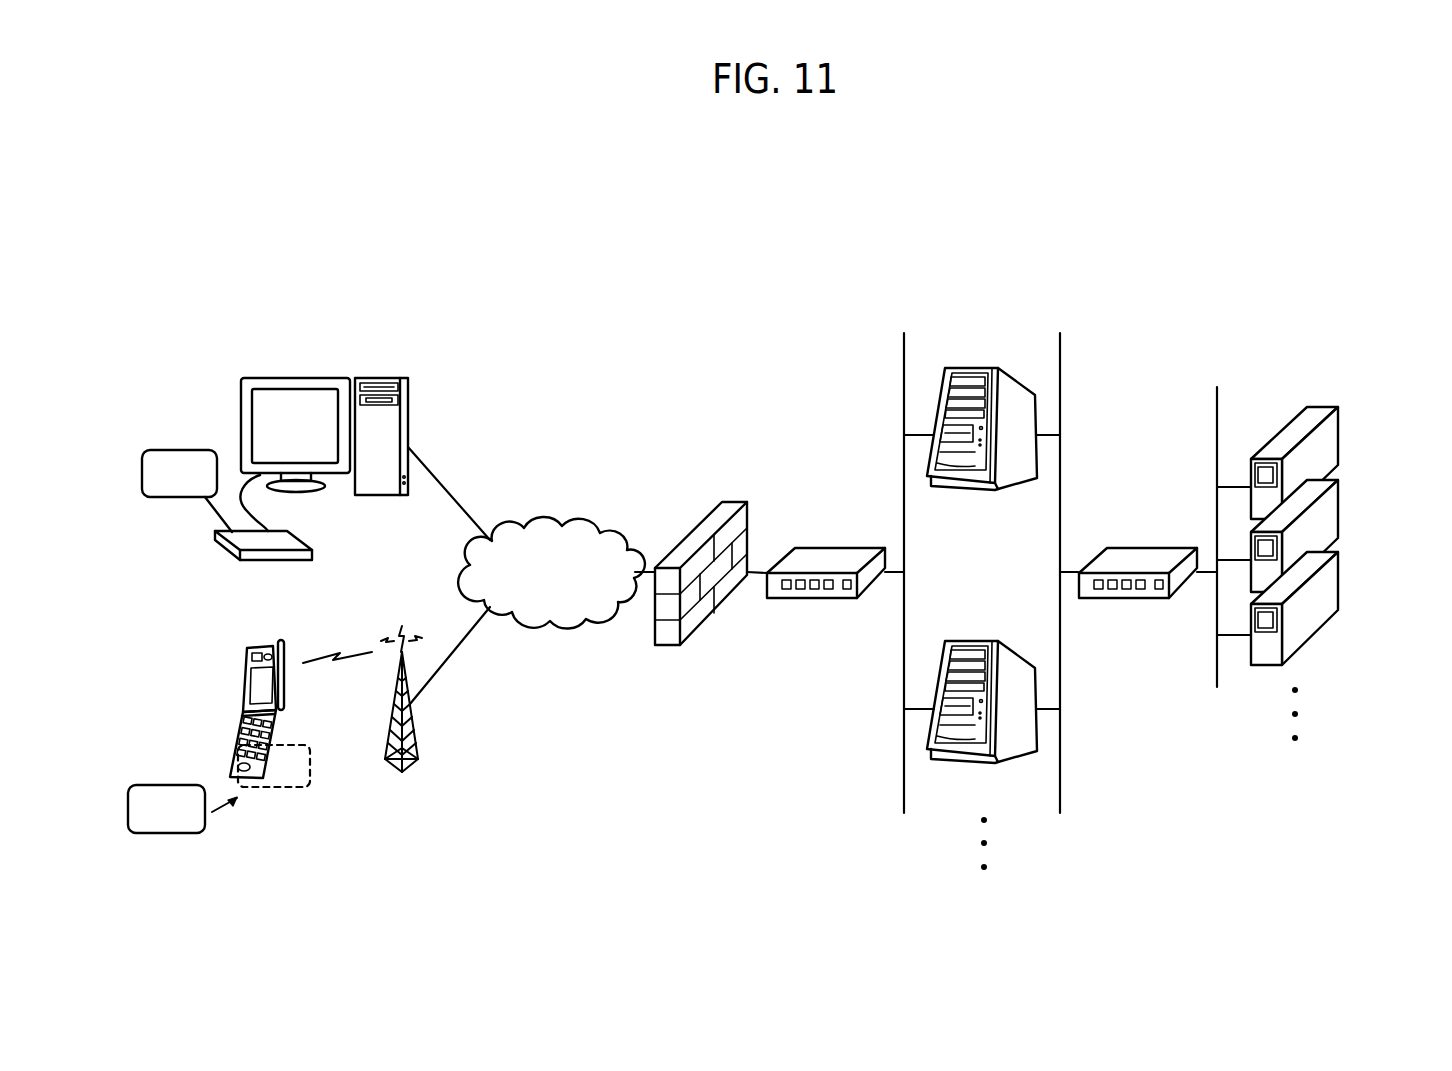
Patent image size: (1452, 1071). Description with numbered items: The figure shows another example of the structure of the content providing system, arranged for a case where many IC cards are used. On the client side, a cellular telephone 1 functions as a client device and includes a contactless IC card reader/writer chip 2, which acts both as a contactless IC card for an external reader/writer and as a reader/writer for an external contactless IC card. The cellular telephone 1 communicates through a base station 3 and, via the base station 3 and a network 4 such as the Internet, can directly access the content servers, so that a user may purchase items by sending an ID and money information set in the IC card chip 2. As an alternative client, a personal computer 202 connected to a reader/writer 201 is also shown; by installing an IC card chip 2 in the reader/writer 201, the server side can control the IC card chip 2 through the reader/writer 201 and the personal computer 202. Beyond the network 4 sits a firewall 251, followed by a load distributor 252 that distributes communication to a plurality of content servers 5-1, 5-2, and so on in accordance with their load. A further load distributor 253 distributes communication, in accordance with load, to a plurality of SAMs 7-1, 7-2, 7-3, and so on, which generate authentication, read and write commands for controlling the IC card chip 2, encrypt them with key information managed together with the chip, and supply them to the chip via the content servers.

The cellular telephone 1 is at (246, 681).
The contactless IC card reader/writer chip 2 is at (178, 450).
The base station 3 is at (388, 773).
The network 4 is at (548, 525).
The content server 5-1 is at (985, 368).
The content server 5-2 is at (985, 641).
The SAM 7-1 is at (1340, 433).
The SAM 7-2 is at (1340, 506).
The SAM 7-3 is at (1340, 580).
The reader/writer 201 is at (227, 547).
The personal computer 202 is at (382, 378).
The firewall 251 is at (728, 502).
The load distributor 252 is at (835, 547).
The load distributor 253 is at (1147, 547).